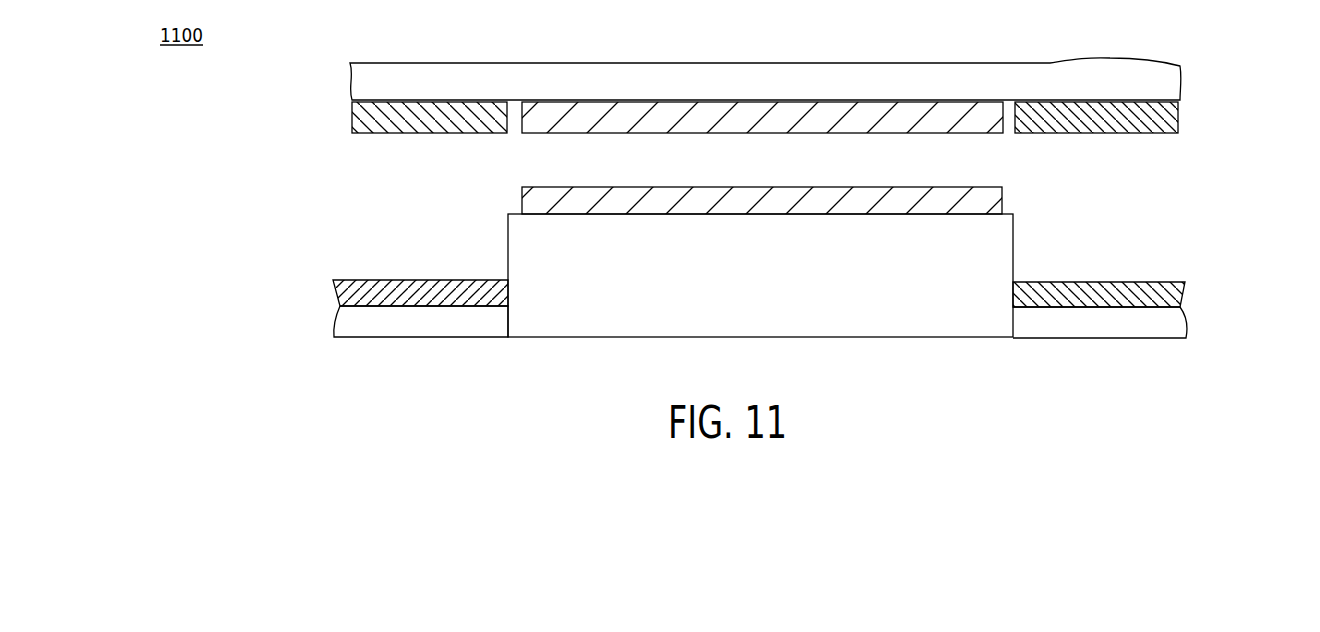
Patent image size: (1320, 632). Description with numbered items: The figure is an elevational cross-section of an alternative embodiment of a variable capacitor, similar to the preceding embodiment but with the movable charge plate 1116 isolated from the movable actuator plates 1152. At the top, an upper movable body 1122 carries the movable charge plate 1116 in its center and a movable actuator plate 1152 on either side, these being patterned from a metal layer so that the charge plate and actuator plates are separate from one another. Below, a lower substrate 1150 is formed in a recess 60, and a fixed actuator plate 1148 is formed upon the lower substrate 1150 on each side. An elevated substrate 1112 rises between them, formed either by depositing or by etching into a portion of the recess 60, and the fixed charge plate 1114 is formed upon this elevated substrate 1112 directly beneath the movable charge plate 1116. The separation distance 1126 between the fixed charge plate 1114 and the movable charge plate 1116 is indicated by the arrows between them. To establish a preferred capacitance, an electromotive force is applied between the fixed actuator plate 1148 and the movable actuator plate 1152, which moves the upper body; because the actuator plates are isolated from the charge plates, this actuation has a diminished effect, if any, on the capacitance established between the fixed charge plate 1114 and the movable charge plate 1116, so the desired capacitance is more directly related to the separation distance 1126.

The upper substrate 1122 is at (1170, 90).
The movable actuator plate 1152 is at (350, 120).
The movable charge plate 1116 is at (845, 101).
The separation distance 1126 is at (679, 134).
The fixed charge plate 1114 is at (522, 200).
The elevated substrate 1112 is at (760, 290).
The fixed actuator plate 1148 is at (340, 290).
The lower substrate 1150 is at (345, 320).
The recess 60 is at (1055, 243).